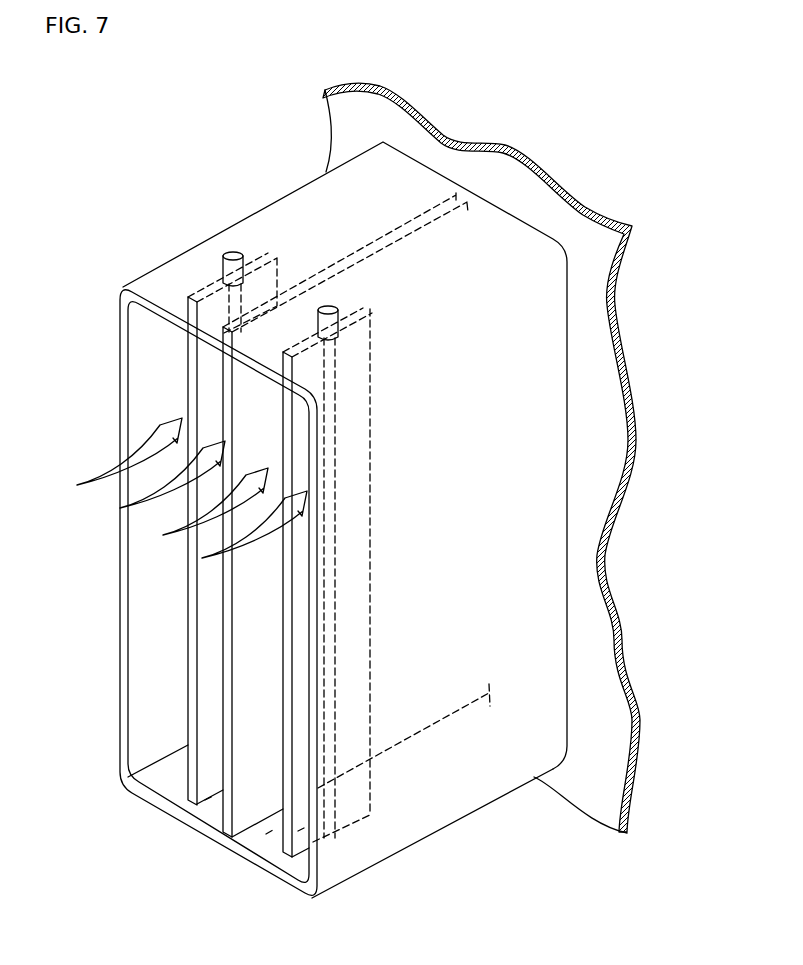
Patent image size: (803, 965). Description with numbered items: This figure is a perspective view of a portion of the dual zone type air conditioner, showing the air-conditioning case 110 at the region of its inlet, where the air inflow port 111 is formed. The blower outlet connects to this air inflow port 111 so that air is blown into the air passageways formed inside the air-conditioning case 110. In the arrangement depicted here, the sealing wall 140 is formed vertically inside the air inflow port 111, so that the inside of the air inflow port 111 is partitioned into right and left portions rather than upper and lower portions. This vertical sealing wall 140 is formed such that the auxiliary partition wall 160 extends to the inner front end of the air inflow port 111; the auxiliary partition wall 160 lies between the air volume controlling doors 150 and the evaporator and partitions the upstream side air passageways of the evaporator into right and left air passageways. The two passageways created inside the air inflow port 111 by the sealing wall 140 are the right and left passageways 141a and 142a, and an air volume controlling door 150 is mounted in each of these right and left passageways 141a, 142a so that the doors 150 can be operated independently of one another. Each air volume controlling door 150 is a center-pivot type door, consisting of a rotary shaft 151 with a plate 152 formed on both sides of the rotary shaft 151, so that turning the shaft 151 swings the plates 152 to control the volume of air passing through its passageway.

The air-conditioning case 110 is at (590, 279).
The air inflow port 111 is at (343, 884).
The sealing wall 140 is at (316, 547).
The right passageway 141a is at (210, 803).
The left passageway 142a is at (270, 833).
The air volume controlling door 150 is at (249, 539).
The rotary shaft 151 is at (233, 251).
The plate 152 is at (202, 288).
The auxiliary partition wall 160 is at (448, 717).